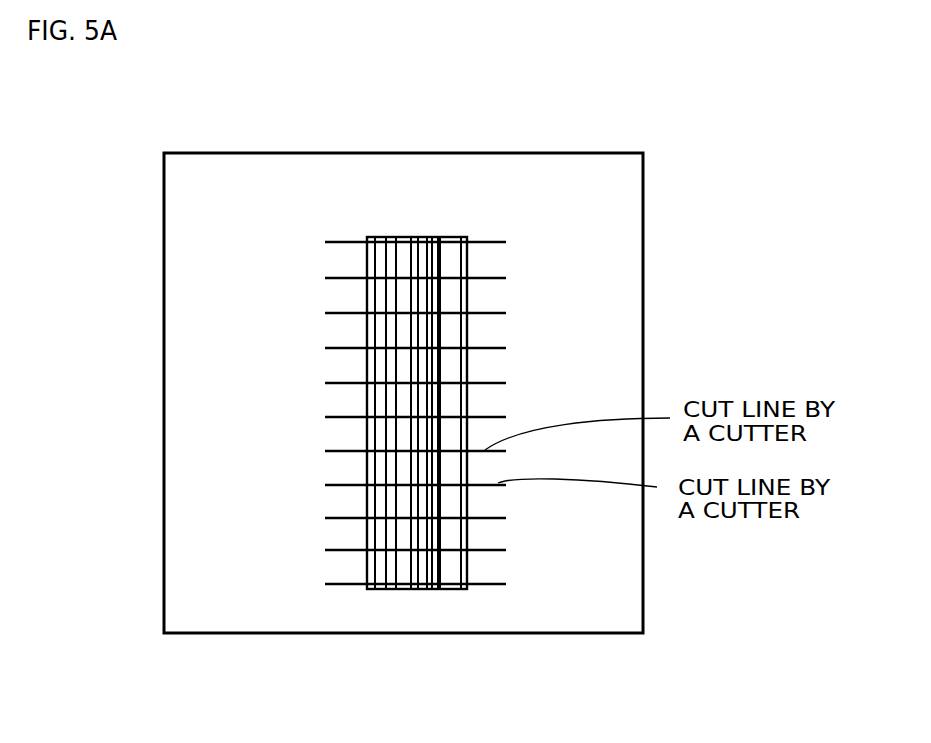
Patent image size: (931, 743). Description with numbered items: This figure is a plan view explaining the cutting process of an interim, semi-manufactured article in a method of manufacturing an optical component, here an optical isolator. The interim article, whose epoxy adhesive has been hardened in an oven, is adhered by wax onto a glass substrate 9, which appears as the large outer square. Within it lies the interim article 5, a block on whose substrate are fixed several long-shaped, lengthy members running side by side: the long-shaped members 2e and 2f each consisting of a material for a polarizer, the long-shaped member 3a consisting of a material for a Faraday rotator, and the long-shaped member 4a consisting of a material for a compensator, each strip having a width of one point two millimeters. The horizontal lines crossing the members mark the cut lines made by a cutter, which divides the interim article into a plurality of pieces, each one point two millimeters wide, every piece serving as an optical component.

The glass substrate 9 is at (620, 597).
The optical fiber block 5 is at (367, 573).
The long-shaped member 3a is at (400, 502).
The long-shaped member 2e is at (380, 578).
The long-shaped member 2f is at (427, 580).
The long-shaped member 4a is at (453, 575).